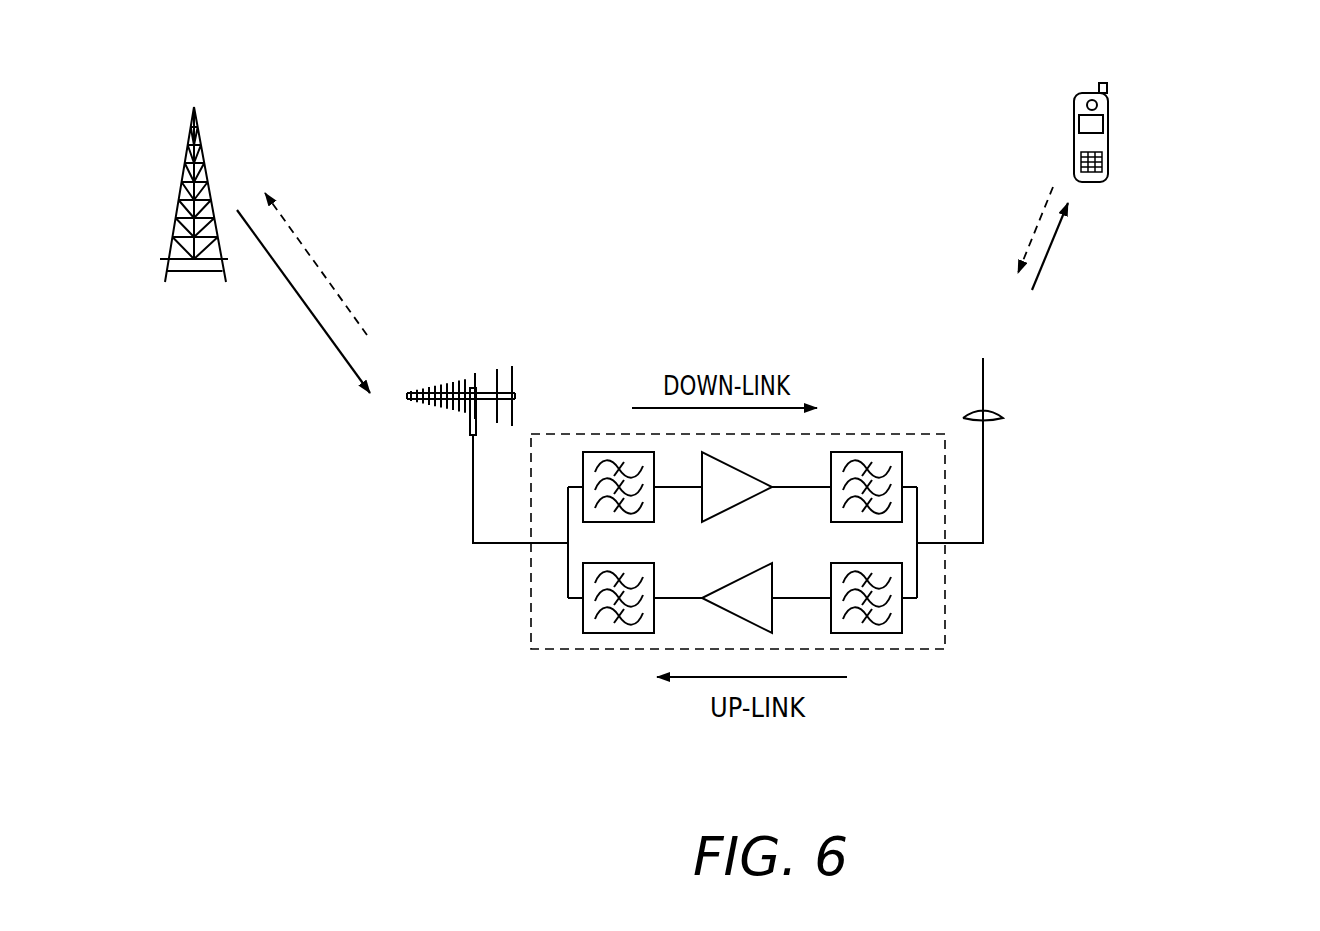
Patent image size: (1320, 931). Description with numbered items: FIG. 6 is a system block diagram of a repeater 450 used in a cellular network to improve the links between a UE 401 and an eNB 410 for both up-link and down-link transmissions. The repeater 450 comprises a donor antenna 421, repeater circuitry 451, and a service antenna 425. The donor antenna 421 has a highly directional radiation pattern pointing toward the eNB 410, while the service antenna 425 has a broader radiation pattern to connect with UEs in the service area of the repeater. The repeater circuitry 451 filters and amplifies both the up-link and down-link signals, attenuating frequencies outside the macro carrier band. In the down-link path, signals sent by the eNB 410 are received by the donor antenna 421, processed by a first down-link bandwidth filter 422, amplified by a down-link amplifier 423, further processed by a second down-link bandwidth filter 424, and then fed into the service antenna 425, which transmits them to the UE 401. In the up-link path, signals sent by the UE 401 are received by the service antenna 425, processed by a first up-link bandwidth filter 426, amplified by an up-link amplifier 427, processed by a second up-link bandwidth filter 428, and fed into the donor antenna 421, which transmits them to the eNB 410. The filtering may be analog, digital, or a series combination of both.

The UE 401 is at (1110, 140).
The eNB 410 is at (212, 193).
The donor antenna 421 is at (487, 373).
The first down-link bandwidth filter 422 is at (620, 452).
The down-link amplifier 423 is at (740, 466).
The second down-link bandwidth filter 424 is at (866, 452).
The service antenna 425 is at (985, 385).
The first up-link bandwidth filter 426 is at (865, 633).
The up-link amplifier 427 is at (733, 615).
The second up-link bandwidth filter 428 is at (620, 633).
The repeater 450 is at (627, 200).
The repeater circuitry 451 is at (532, 592).